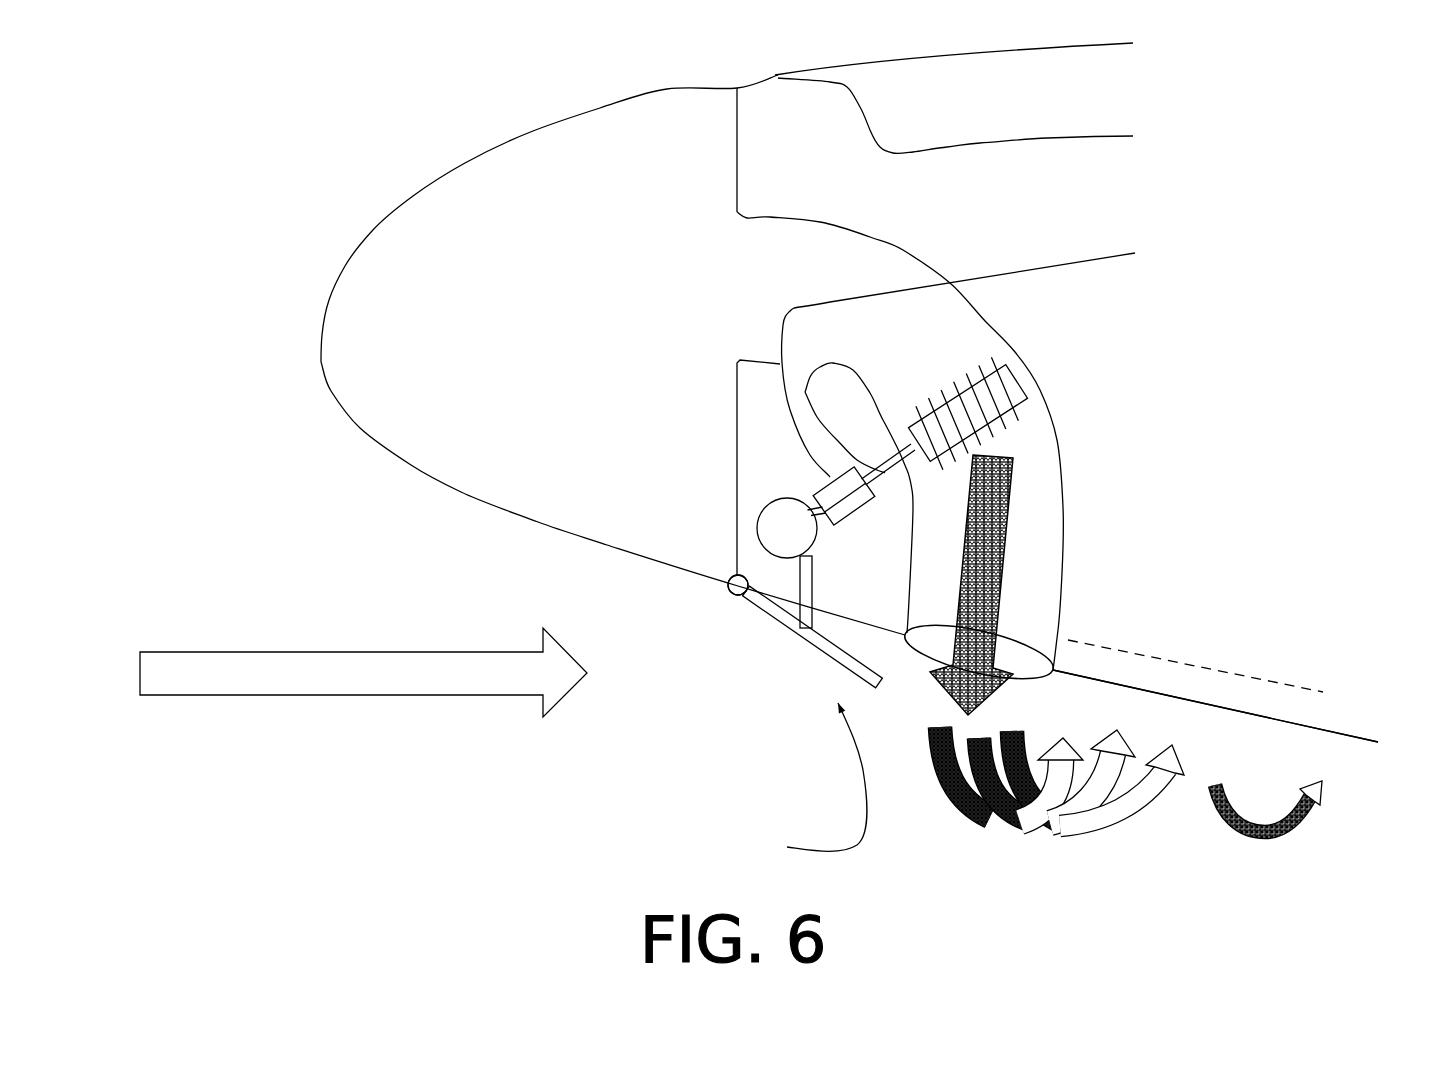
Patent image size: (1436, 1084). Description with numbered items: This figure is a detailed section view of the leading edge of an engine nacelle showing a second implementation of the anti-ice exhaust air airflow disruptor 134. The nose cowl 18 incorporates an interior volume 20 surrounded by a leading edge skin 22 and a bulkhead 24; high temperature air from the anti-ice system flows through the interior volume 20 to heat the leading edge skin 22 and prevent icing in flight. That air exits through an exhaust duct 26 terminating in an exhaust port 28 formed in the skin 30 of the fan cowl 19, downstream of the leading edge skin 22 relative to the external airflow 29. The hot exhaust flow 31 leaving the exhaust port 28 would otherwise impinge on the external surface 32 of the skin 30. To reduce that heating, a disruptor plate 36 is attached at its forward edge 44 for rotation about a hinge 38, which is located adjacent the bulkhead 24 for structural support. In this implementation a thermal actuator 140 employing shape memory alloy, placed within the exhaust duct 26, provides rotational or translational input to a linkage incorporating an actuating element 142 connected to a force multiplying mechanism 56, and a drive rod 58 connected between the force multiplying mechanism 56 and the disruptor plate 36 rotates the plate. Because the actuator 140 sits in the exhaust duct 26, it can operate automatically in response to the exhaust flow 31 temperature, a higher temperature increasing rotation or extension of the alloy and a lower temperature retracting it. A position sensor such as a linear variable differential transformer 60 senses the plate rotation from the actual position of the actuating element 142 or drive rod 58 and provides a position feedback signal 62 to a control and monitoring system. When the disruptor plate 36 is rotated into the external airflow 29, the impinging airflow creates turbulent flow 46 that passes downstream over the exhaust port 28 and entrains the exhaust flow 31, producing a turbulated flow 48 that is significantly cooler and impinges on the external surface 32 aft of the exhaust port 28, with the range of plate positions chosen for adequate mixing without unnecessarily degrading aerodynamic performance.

The nose cowl 18 is at (567, 537).
The fan cowl 19 is at (1373, 744).
The interior volume 20 is at (437, 367).
The leading edge skin 22 is at (450, 487).
The bulkhead 24 is at (737, 483).
The exhaust duct 26 is at (857, 275).
The exhaust port 28 is at (1018, 660).
The external airflow 29 is at (415, 697).
The skin 30 is at (1152, 678).
The exhaust flow 31 is at (1003, 563).
The external surface 32 is at (1222, 710).
The disruptor plate 36 is at (803, 642).
The hinge 38 is at (733, 593).
The forward edge 44 is at (740, 598).
The turbulent flow 46 is at (1060, 823).
The turbulated flow 48 is at (1305, 827).
The force multiplying mechanism 56 is at (780, 528).
The drive rod 58 is at (812, 593).
The linear variable differential transformer 60 is at (822, 482).
The position feedback signal 62 is at (1007, 273).
The anti-ice exhaust air airflow disruptor 134 is at (803, 784).
The thermal actuator 140 is at (1032, 393).
The actuating element 142 is at (825, 366).